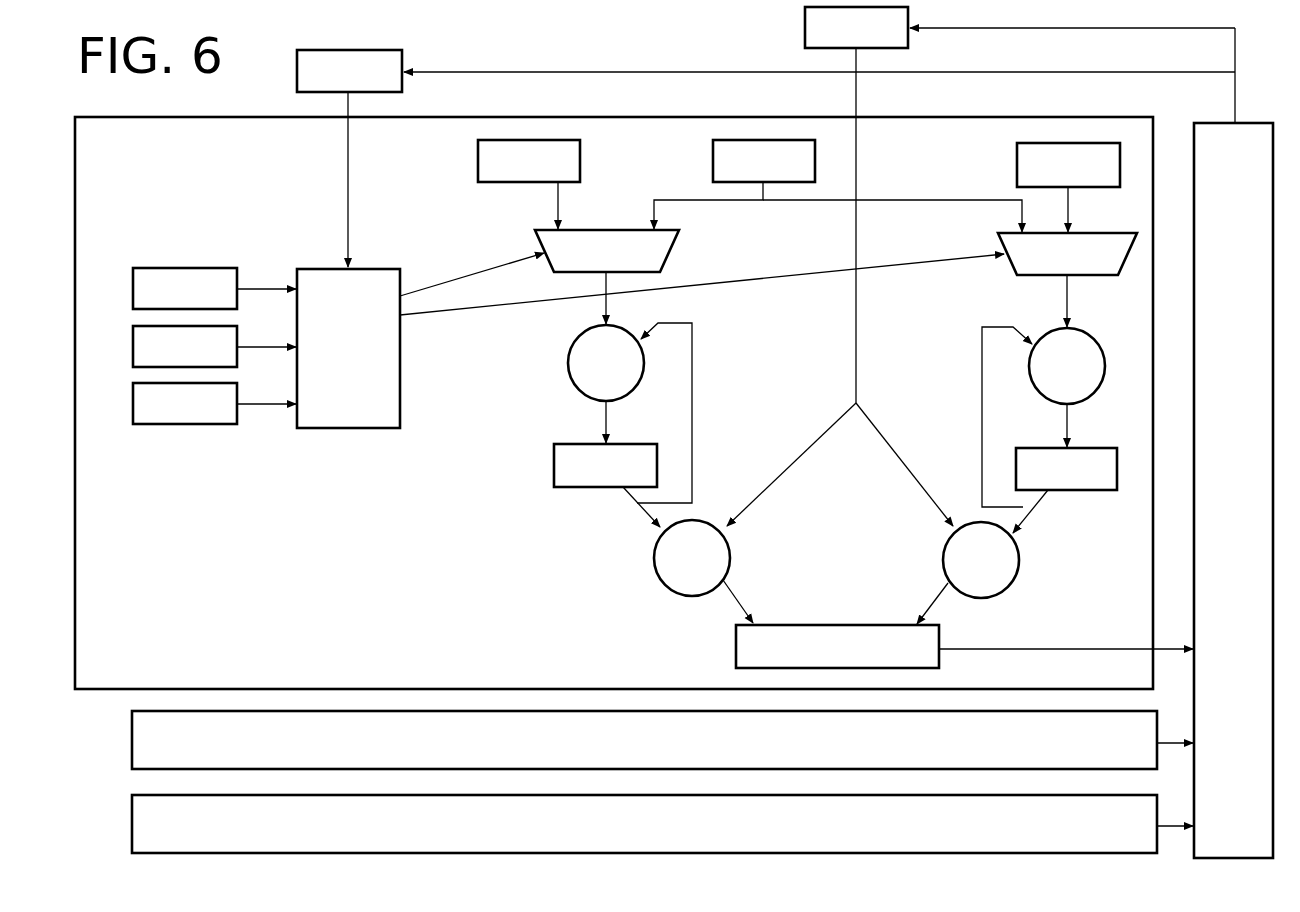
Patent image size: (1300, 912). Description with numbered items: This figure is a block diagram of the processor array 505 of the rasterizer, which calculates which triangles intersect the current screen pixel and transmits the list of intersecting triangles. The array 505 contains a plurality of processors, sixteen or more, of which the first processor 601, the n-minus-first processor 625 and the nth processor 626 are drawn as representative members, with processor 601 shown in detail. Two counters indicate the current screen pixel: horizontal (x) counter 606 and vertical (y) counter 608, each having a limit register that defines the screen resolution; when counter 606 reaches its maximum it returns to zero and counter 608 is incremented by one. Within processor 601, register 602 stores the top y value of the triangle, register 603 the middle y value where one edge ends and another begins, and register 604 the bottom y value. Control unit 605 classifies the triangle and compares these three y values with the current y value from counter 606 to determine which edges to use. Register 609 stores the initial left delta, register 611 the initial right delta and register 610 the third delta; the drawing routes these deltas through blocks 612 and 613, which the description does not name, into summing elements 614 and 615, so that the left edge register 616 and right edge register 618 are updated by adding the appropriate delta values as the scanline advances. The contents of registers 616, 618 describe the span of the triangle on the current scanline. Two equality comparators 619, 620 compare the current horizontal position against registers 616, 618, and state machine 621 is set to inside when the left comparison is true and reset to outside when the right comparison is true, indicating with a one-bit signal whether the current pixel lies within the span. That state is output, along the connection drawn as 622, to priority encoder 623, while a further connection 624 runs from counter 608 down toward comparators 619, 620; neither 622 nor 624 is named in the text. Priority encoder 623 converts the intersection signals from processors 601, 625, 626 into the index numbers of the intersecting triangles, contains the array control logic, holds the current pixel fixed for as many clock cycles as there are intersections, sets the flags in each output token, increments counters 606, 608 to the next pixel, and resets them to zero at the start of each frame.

The processor array 505 is at (565, 47).
The processor 601 is at (165, 199).
The top y register 602 is at (166, 300).
The middle y register 603 is at (166, 358).
The bottom y register 604 is at (166, 415).
The control unit 605 is at (329, 337).
The horizontal (x) counter 606 is at (330, 82).
The vertical (y) counter 608 is at (837, 39).
The left delta register 609 is at (510, 172).
The third delta register 610 is at (745, 172).
The right delta register 611 is at (1049, 175).
The multiplexer 612 is at (587, 263).
The multiplexer 613 is at (1048, 266).
The adder 614 is at (587, 360).
The adder 615 is at (1048, 363).
The left edge register 616 is at (587, 476).
The right edge register 618 is at (1047, 480).
The equality comparator 619 is at (673, 555).
The equality comparator 620 is at (962, 557).
The state machine 621 is at (819, 657).
The output line 622 is at (1093, 649).
The priority encoder 623 is at (1214, 234).
The data line 624 is at (856, 145).
The processor 625 is at (163, 751).
The processor 626 is at (163, 834).